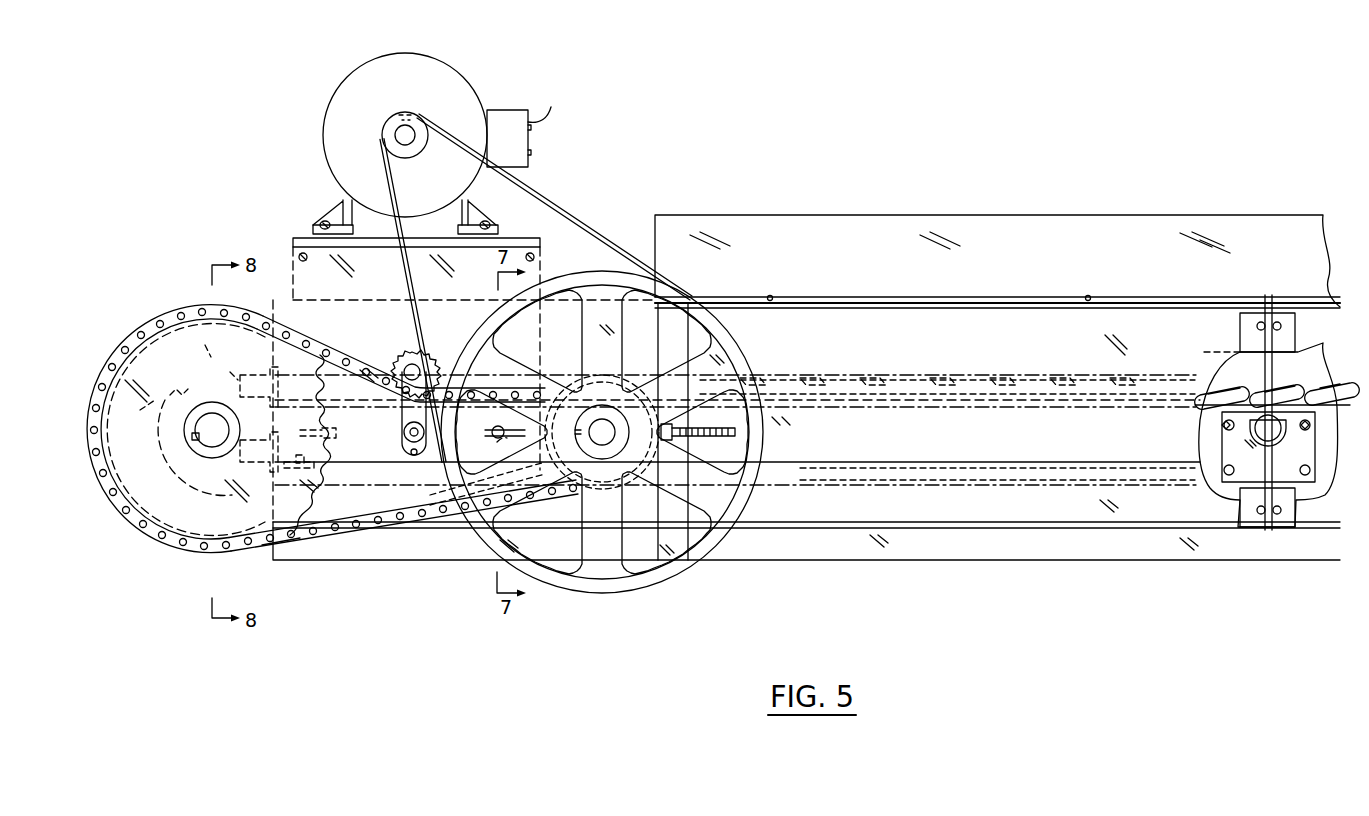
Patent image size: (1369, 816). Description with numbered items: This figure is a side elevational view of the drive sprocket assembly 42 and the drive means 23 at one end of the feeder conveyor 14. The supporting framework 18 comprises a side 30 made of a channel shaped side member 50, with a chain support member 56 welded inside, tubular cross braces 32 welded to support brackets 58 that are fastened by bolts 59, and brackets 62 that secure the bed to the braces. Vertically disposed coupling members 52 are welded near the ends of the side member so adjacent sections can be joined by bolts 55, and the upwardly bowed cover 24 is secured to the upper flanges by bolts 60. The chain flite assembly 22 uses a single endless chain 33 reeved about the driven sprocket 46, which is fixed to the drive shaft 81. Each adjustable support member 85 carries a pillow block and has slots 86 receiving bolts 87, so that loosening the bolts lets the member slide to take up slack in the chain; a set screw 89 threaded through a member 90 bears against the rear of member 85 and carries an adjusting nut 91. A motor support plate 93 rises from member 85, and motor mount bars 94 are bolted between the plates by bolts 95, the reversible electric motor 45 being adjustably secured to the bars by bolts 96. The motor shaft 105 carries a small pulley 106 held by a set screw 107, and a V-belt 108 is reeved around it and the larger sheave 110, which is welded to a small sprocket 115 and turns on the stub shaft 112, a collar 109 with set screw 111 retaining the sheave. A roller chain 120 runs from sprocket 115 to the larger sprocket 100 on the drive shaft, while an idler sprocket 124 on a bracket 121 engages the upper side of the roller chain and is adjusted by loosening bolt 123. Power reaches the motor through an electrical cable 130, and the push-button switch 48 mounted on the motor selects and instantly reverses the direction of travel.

The feeder conveyor 14 is at (1198, 500).
The supporting framework 18 is at (1158, 566).
The chain flite assembly 22 is at (883, 370).
The drive means 23 is at (324, 175).
The cover 24 is at (950, 220).
The side 30 is at (1055, 521).
The cross brace 32 is at (1250, 430).
The chain 33 is at (1040, 374).
The drive sprocket assembly 42 is at (175, 299).
The reversible electric motor 45 is at (425, 60).
The driven sprocket 46 is at (168, 452).
The push-button switch 48 is at (506, 110).
The side member 50 is at (954, 515).
The coupling member 52 is at (1274, 320).
The bolt 55 is at (1258, 327).
The chain support member 56 is at (845, 415).
The support bracket 58 is at (1312, 452).
The bolt 59 is at (1234, 472).
The bolt 60 is at (772, 296).
The bracket 62 is at (1312, 428).
The drive shaft 81 is at (212, 457).
The adjustable support member 85 is at (380, 462).
The slot 86 is at (488, 434).
The bolt 87 is at (297, 456).
The set screw 89 is at (735, 432).
The member 90 is at (695, 323).
The adjusting nut 91 is at (673, 443).
The motor support plate 93 is at (540, 262).
The motor mount bar 94 is at (312, 230).
The bolt 95 is at (353, 228).
The bolt 96 is at (325, 220).
The larger sprocket 100 is at (190, 535).
The motor shaft 105 is at (412, 140).
The pulley 106 is at (410, 150).
The set screw 107 is at (412, 116).
The V-belt 108 is at (538, 196).
The collar 109 is at (612, 468).
The sheave 110 is at (648, 578).
The set screw 111 is at (573, 428).
The stub shaft 112 is at (606, 424).
The sprocket 115 is at (582, 492).
The roller chain 120 is at (275, 552).
The bracket 121 is at (414, 458).
The bolt 123 is at (404, 431).
The idler sprocket 124 is at (400, 360).
The electrical cable 130 is at (552, 110).